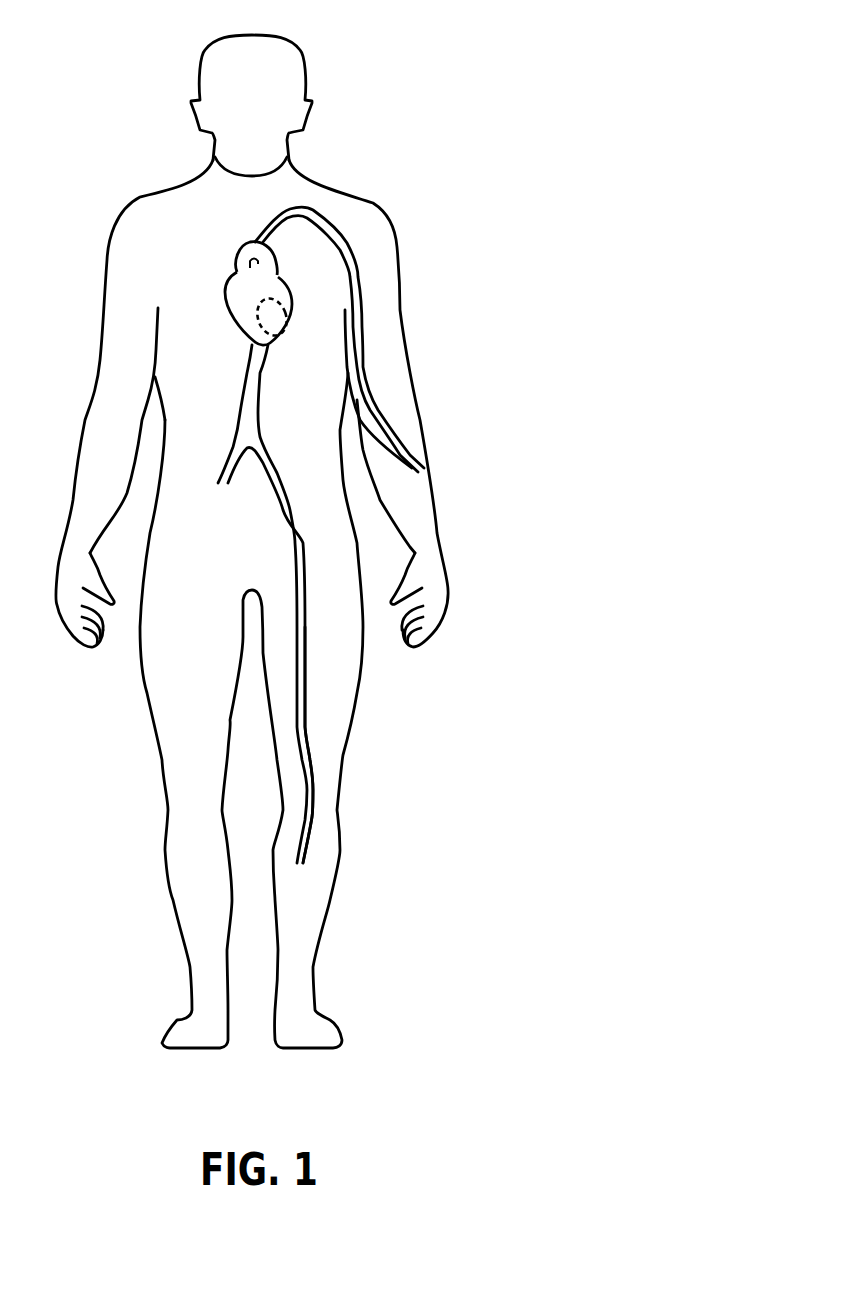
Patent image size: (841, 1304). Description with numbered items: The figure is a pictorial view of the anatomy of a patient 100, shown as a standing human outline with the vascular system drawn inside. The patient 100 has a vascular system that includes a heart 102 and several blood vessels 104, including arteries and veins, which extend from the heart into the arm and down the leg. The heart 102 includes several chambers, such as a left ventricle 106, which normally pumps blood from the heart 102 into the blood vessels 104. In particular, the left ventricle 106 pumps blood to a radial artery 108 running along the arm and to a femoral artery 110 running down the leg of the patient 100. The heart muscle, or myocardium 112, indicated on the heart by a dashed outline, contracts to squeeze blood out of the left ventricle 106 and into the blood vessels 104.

The patient 100 is at (378, 100).
The heart 102 is at (223, 293).
The blood vessels 104 is at (415, 546).
The left ventricle 106 is at (277, 300).
The radial artery 108 is at (358, 287).
The femoral artery 110 is at (307, 669).
The myocardium 112 is at (245, 313).